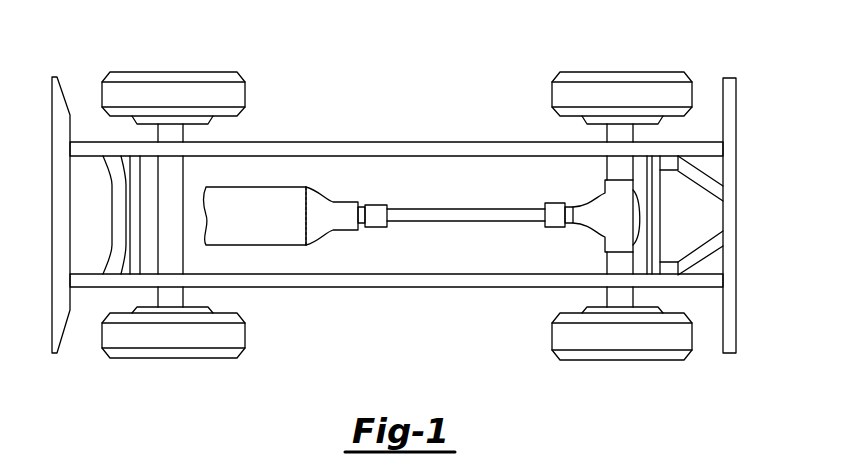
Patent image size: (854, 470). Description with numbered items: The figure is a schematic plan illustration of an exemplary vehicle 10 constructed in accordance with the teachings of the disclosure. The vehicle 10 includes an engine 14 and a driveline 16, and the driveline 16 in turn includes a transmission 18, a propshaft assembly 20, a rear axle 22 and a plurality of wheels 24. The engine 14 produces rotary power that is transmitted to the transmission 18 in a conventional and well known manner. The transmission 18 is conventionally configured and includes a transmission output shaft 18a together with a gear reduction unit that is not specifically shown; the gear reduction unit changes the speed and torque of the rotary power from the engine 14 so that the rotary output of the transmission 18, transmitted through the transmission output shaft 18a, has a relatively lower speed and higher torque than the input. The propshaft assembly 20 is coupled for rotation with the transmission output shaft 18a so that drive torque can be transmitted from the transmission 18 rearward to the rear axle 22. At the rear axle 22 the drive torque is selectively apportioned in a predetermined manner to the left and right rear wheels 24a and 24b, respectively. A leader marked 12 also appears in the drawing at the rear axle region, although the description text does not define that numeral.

The vehicle 10 is at (349, 82).
The rear axle assembly 12 is at (560, 200).
The engine 14 is at (258, 227).
The driveline 16 is at (353, 252).
The transmission 18 is at (317, 208).
The transmission output shaft 18a is at (362, 217).
The propshaft assembly 20 is at (440, 217).
The rear axle 22 is at (594, 246).
The wheels 24 is at (147, 364).
The left rear wheel 24a is at (560, 332).
The right rear wheel 24b is at (618, 88).